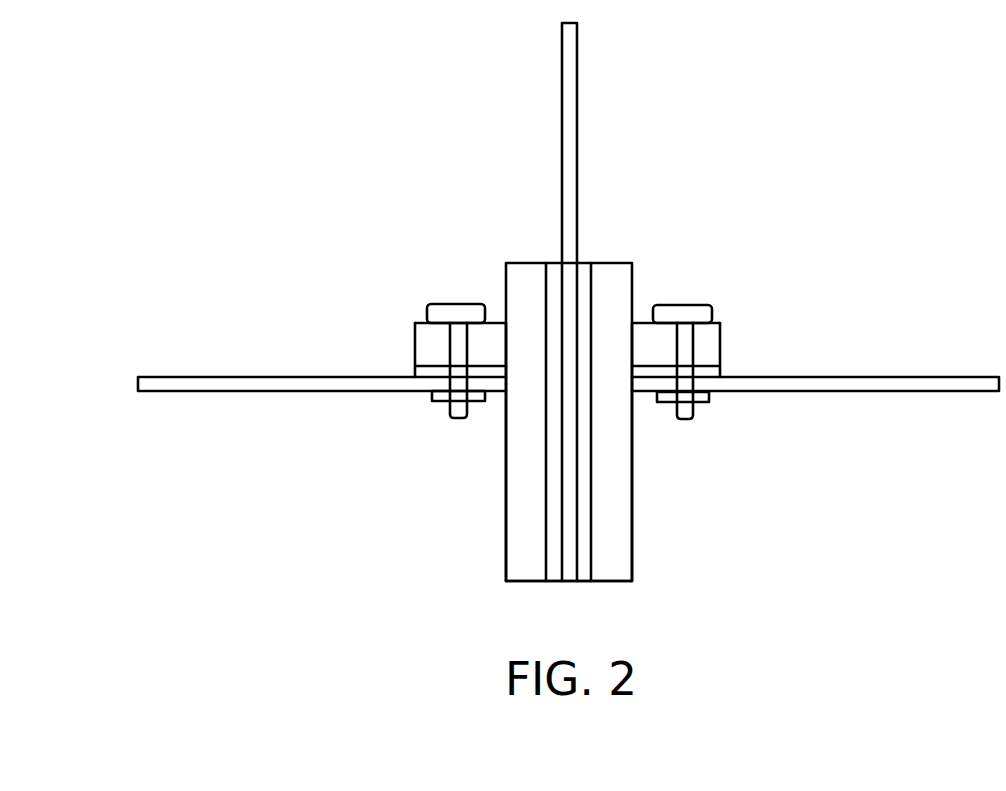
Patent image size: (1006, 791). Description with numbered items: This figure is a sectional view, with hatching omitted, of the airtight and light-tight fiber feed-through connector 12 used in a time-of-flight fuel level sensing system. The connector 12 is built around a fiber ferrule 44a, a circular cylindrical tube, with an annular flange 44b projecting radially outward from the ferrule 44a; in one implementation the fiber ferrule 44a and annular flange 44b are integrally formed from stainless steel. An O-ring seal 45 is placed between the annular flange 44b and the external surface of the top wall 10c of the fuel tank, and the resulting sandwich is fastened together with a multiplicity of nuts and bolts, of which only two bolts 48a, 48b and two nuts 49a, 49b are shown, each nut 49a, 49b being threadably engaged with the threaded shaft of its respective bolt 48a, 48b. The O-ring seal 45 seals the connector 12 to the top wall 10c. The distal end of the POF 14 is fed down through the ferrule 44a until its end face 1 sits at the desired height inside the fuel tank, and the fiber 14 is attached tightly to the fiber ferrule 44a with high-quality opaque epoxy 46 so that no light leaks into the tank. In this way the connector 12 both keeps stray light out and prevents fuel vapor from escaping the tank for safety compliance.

The end face 1 is at (571, 581).
The top wall 10c is at (225, 377).
The airtight and light-tight fiber feed-through connector 12 is at (616, 262).
The POF 14 is at (561, 137).
The fiber ferrule 44a is at (505, 278).
The annular flange 44b is at (720, 340).
The O-ring seal 45 is at (414, 371).
The opaque epoxy 46 is at (546, 464).
The bolt 48a is at (457, 304).
The bolt 48b is at (680, 306).
The nut 49a is at (440, 401).
The nut 49b is at (699, 403).